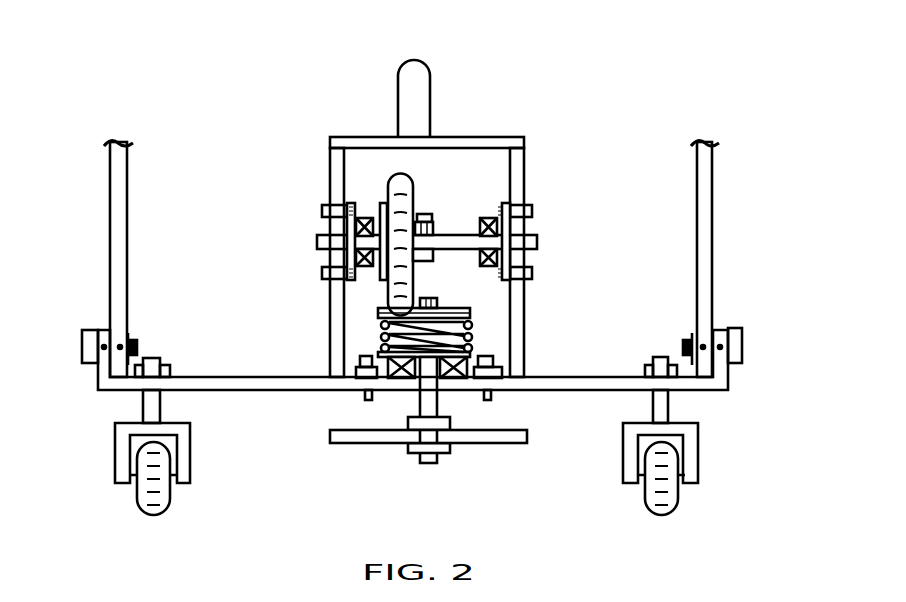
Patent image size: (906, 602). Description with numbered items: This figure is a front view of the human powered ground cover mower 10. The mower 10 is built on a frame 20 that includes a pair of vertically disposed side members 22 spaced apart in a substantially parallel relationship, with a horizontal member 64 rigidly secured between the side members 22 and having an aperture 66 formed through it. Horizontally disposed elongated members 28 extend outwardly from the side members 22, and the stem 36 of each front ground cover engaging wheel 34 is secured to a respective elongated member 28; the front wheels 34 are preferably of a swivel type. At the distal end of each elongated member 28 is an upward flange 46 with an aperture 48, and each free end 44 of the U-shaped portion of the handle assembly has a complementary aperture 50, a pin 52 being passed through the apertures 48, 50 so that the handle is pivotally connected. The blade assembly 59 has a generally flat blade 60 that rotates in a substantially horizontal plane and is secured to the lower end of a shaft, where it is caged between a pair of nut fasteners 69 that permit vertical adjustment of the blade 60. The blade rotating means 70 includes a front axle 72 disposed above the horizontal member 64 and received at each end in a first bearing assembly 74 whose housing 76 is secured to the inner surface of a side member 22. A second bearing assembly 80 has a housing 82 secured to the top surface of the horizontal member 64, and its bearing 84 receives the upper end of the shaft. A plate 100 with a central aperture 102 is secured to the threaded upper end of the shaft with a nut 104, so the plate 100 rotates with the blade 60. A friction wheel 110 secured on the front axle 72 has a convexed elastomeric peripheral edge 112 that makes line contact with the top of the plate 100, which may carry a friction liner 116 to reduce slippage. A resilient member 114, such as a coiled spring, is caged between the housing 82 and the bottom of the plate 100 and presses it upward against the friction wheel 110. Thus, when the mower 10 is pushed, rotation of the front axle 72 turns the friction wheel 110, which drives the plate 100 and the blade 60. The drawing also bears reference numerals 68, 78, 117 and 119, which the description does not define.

The human powered ground cover mower 10 is at (205, 72).
The frame 20 is at (527, 132).
The side members 22 is at (330, 160).
The elongated members 28 is at (253, 391).
The front ground cover engaging wheels 34 is at (170, 495).
The stem 36 is at (143, 400).
The free ends 44 is at (127, 307).
The upward flange 46 is at (728, 383).
The aperture 48 is at (721, 345).
The complimentary aperture 50 is at (703, 345).
The pin 52 is at (82, 350).
The blade assembly 59 is at (392, 482).
The blade 60 is at (505, 443).
The horizontal member 64 is at (355, 386).
The aperture 66 is at (418, 394).
The right bracket 68 is at (440, 400).
The nut fasteners 69 is at (452, 420).
The blade rotating means 70 is at (465, 130).
The front axle 72 is at (537, 240).
The first bearing assemblies 74 is at (330, 260).
The housing 76 is at (360, 282).
The left shaft bracket 78 is at (330, 224).
The second bearing assembly 80 is at (512, 334).
The housing 82 is at (470, 355).
The bearing 84 is at (510, 388).
The plate 100 is at (472, 312).
The central aperture 102 is at (426, 300).
The nut 104 is at (438, 302).
The friction wheel 110 is at (394, 182).
The peripheral edge 112 is at (405, 178).
The resilient member 114 is at (383, 340).
The friction liner 116 is at (385, 306).
The collar 117 is at (434, 228).
The cap 119 is at (423, 214).